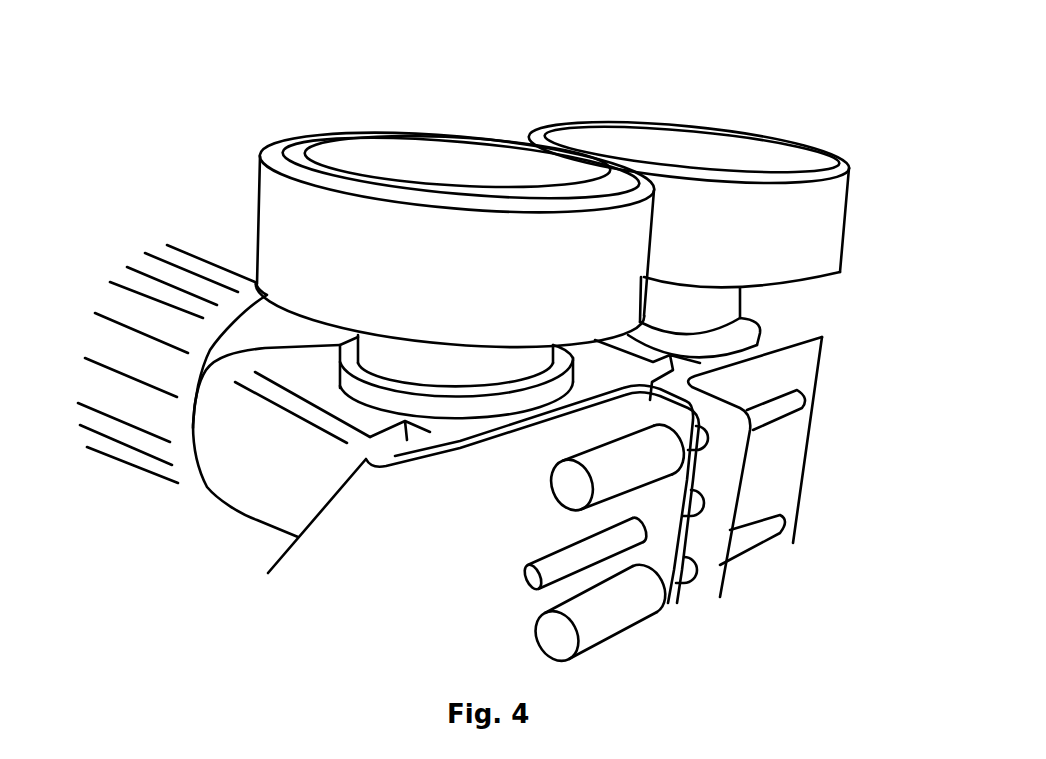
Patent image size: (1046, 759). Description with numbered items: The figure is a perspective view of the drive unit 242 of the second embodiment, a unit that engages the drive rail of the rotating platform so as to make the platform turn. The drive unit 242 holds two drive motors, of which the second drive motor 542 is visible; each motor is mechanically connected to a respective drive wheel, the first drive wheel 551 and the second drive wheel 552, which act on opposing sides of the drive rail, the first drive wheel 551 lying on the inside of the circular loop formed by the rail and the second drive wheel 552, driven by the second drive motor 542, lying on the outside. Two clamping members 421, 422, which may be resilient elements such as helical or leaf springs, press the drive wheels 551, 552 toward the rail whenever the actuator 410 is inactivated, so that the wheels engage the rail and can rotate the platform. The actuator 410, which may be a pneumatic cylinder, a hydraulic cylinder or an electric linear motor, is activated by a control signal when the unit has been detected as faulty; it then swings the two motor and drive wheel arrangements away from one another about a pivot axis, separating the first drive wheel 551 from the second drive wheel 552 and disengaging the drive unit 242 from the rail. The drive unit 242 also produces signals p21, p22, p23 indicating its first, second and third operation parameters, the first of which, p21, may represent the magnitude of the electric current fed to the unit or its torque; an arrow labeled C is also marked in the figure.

The drive unit 242 is at (255, 104).
The second drive motor 542 is at (125, 475).
The first drive wheel 551 is at (607, 121).
The second drive wheel 552 is at (292, 237).
The clamping member 421 is at (638, 470).
The clamping member 422 is at (612, 610).
The actuator 410 is at (527, 585).
The first operation parameter signal p21 is at (488, 452).
The second operation parameter signal p22 is at (295, 618).
The third operation parameter signal p23 is at (295, 649).
The movement direction C is at (553, 539).